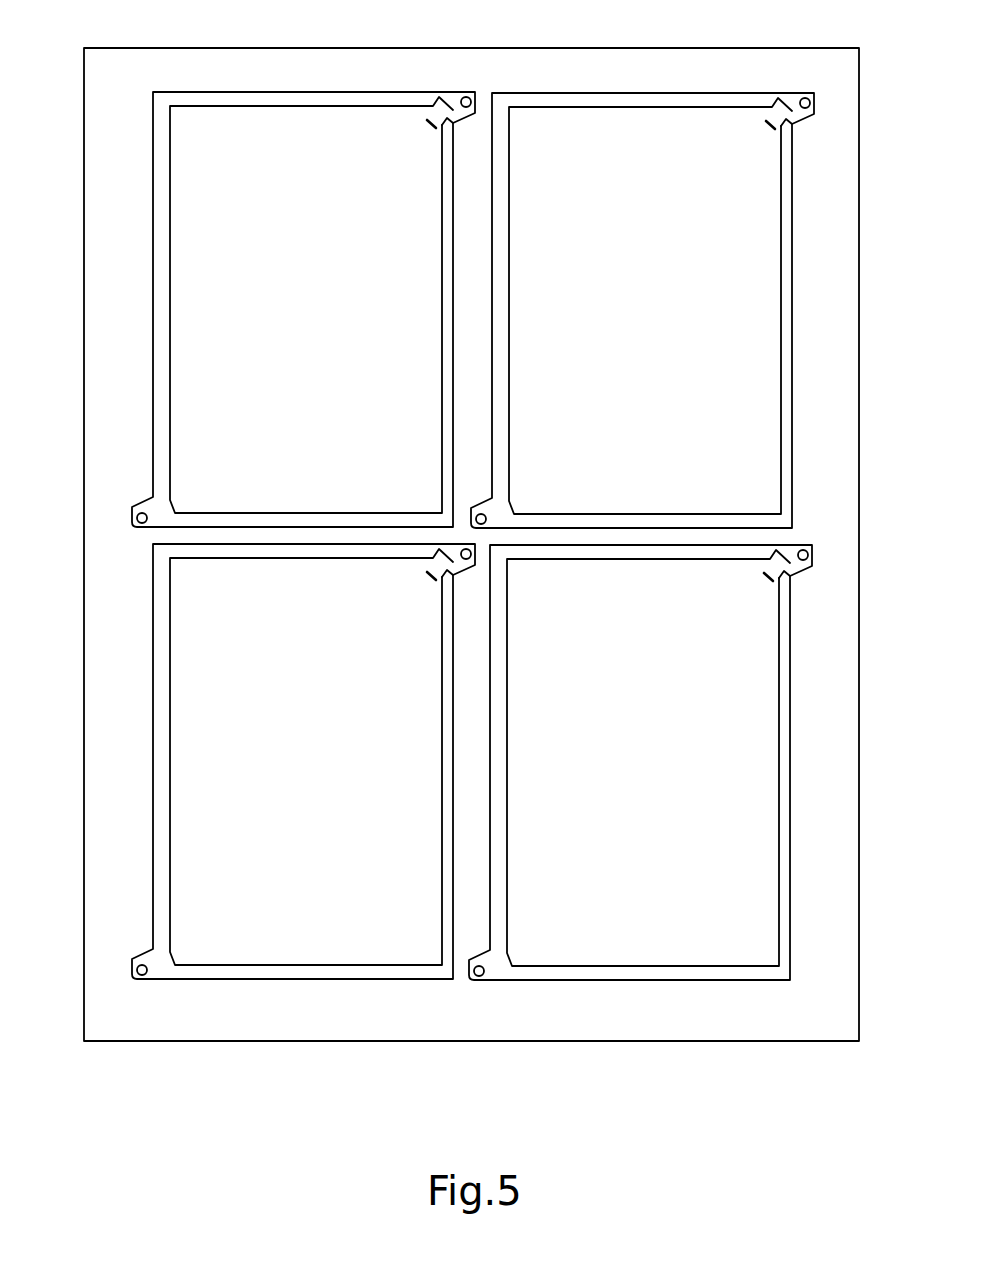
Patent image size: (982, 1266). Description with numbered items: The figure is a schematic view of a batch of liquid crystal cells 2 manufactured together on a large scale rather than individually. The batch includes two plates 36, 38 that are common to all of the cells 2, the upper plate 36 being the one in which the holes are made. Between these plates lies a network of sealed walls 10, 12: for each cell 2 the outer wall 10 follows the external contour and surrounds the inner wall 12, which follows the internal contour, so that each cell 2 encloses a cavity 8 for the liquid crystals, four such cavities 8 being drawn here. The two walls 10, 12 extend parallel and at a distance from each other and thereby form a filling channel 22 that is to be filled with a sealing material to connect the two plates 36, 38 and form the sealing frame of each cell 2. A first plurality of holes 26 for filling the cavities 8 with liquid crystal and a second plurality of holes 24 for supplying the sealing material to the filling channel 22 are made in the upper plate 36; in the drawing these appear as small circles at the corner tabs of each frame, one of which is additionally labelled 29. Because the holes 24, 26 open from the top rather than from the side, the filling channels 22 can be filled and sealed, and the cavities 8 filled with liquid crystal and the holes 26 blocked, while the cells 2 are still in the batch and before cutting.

The liquid crystal cell 2 is at (350, 82).
The cavity 8 is at (311, 338).
The outer sealed wall 10 is at (150, 385).
The inner sealed wall 12 is at (170, 214).
The filling channel 22 is at (160, 290).
The supply hole 24 is at (136, 971).
The filling hole 26 is at (463, 97).
The hole 29 is at (477, 977).
The upper plate 36 is at (480, 524).
The plate 38 is at (852, 82).